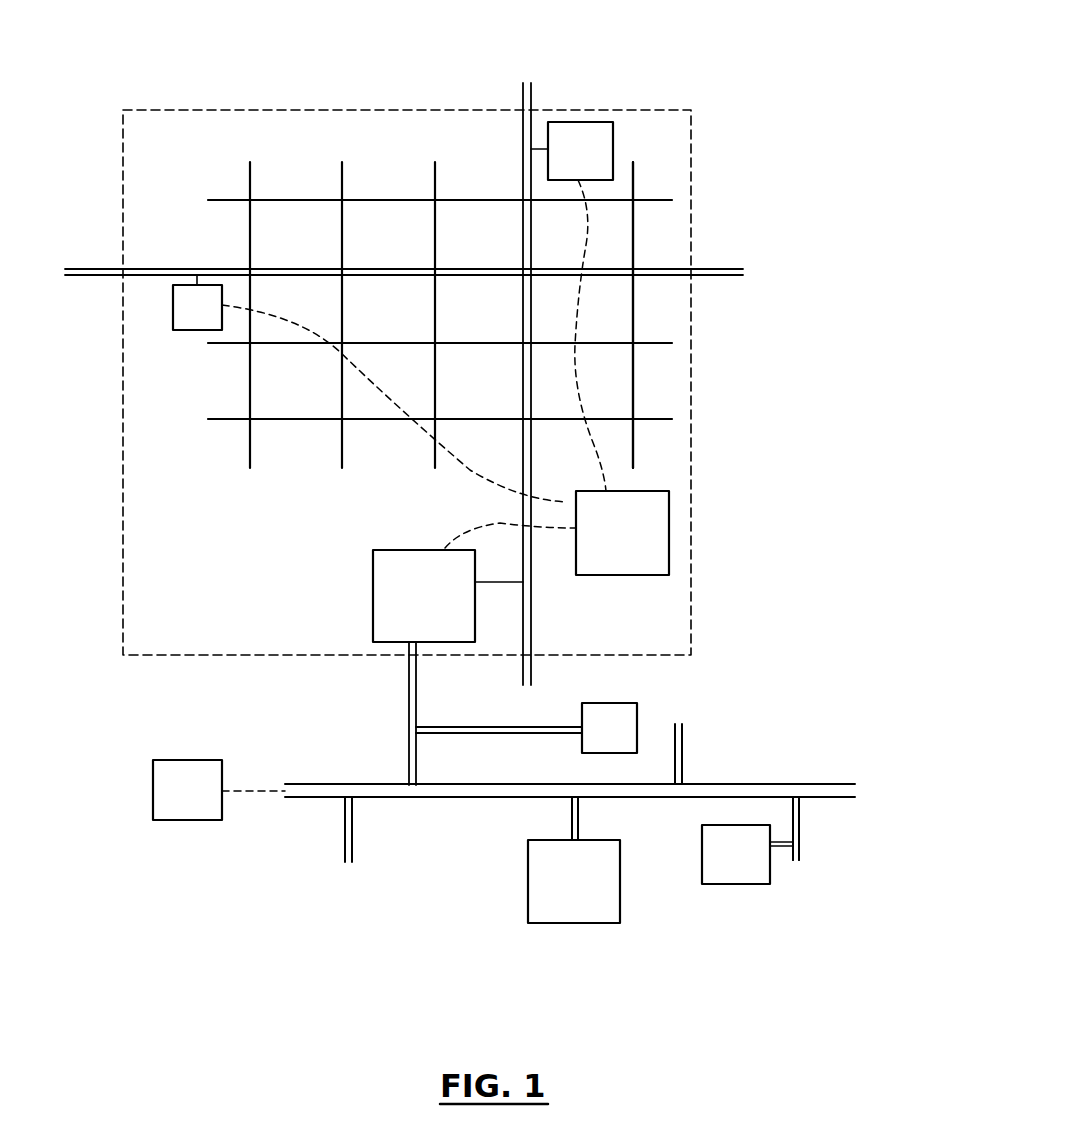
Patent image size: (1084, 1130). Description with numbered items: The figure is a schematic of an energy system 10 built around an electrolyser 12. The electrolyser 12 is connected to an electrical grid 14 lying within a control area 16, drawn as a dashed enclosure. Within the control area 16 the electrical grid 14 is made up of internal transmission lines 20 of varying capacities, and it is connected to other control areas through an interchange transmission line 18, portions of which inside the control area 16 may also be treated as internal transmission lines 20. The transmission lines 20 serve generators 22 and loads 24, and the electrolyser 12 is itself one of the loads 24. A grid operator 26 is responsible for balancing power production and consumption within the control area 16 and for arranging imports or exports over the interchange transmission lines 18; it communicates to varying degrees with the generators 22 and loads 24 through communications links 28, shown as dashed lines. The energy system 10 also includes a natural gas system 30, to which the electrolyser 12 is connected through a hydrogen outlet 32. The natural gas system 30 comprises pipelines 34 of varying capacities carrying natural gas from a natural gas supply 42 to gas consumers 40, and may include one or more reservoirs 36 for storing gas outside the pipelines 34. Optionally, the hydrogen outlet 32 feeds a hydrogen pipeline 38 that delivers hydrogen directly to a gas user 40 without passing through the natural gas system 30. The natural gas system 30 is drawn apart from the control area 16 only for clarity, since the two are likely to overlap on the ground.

The energy system 10 is at (183, 879).
The electrolyser 12 is at (373, 572).
The electrical grid 14 is at (343, 177).
The control area 16 is at (691, 157).
The interchange transmission line 18 is at (723, 276).
The internal transmission lines 20 is at (633, 235).
The generators 22 is at (583, 122).
The loads 24 is at (173, 308).
The grid operator 26 is at (670, 528).
The communications links 28 is at (580, 385).
The natural gas system 30 is at (863, 741).
The hydrogen outlet 32 is at (405, 688).
The pipelines 34 is at (837, 800).
The reservoirs 36 is at (620, 912).
The hydrogen pipeline 38 is at (500, 733).
The gas consumers 40 is at (637, 715).
The natural gas supply 42 is at (222, 810).